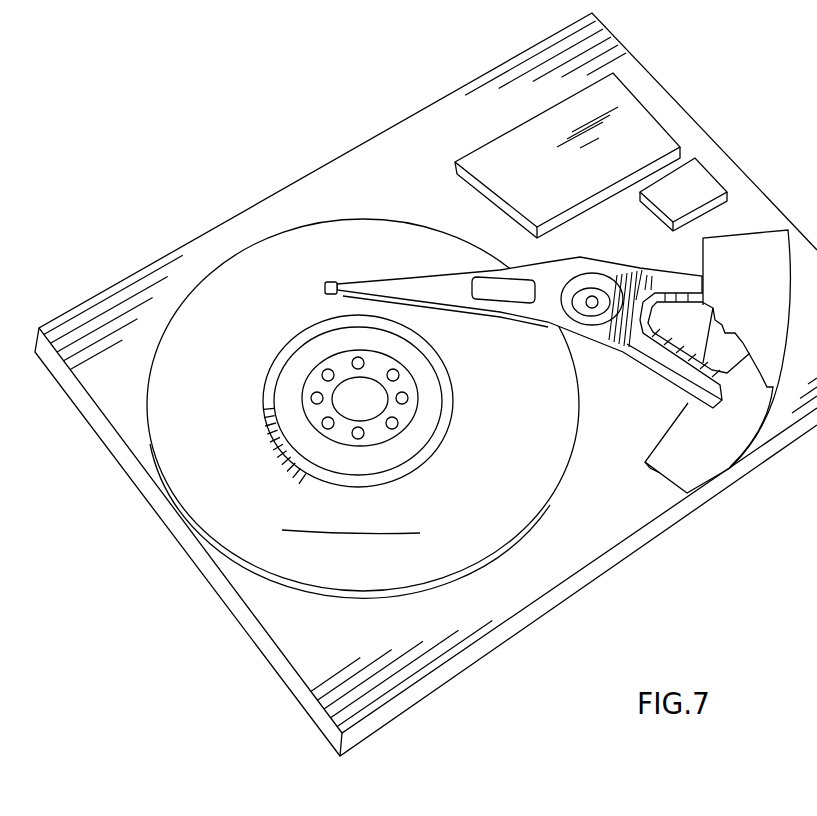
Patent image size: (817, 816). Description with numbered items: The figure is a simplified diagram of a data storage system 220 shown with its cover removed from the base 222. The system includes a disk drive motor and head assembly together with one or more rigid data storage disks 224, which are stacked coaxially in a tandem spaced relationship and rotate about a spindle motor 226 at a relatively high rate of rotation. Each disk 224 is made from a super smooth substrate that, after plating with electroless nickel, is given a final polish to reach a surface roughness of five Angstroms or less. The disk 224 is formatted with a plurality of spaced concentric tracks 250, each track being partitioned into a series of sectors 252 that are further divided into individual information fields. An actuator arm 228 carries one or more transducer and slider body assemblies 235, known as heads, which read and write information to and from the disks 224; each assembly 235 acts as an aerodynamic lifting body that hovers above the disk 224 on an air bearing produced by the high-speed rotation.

The data storage system 220 is at (426, 384).
The base 222 is at (613, 558).
The data storage disk 224 is at (199, 386).
The spindle motor 226 is at (372, 412).
The actuator arm 228 is at (450, 291).
The transducer and slider body assembly 235 is at (326, 283).
The concentric tracks 250 is at (274, 357).
The sectors 252 is at (266, 426).